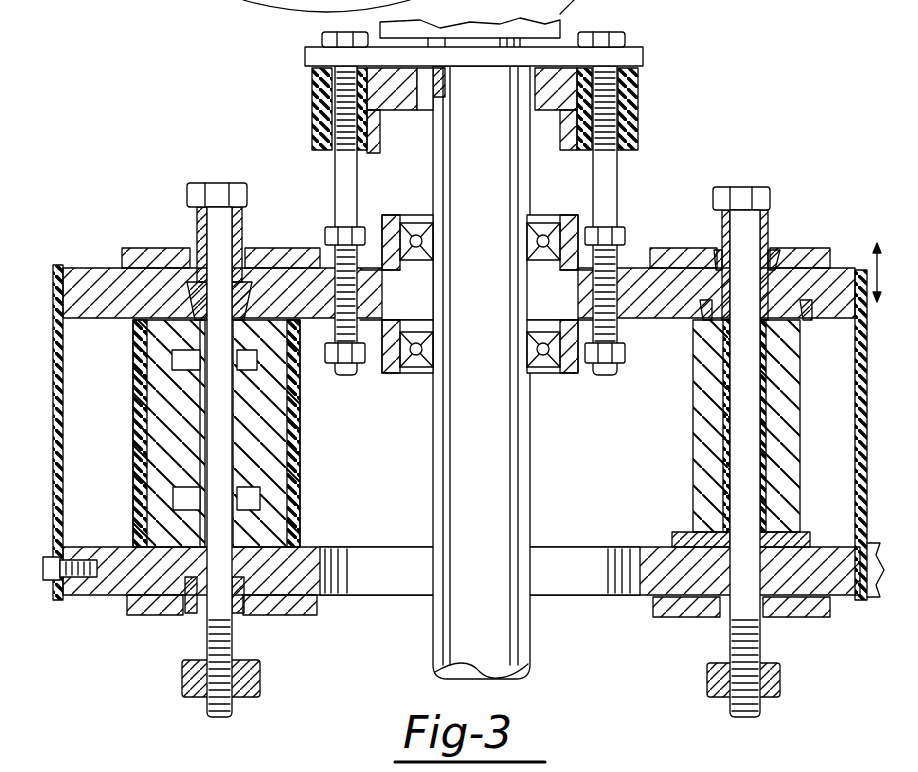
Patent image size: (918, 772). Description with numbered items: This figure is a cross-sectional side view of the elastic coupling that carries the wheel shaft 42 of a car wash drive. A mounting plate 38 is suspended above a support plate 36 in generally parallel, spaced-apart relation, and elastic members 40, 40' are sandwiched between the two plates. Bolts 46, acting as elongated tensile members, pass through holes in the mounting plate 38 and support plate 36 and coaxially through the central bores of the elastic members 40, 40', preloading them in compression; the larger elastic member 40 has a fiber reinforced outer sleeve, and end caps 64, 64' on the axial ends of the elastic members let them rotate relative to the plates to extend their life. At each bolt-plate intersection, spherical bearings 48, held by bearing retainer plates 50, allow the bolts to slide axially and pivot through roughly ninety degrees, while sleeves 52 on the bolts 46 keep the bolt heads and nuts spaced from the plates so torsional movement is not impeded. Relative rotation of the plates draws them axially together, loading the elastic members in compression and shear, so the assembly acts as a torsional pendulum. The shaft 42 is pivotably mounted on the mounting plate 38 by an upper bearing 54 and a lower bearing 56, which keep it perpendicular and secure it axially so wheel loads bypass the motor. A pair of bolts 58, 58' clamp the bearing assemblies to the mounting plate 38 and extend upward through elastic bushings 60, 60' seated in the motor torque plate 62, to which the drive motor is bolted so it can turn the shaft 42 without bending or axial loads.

The support plate 36 is at (823, 550).
The mounting plate 38 is at (853, 270).
The elastic member 40 is at (188, 433).
The elastic member 40' is at (762, 433).
The shaft 42 is at (530, 661).
The bolts 46 is at (212, 182).
The spherical bearings 48 is at (770, 258).
The bearing retainer plates 50 is at (828, 252).
The sleeves 52 is at (720, 230).
The upper bearing 54 is at (399, 216).
The lower bearing 56 is at (395, 380).
The bolt 58 is at (302, 220).
The bolt 58' is at (575, 220).
The elastic bushing 60 is at (327, 104).
The elastic bushing 60' is at (633, 109).
The motor torque plate 62 is at (637, 87).
The end cap 64 is at (162, 410).
The end cap 64' is at (778, 348).